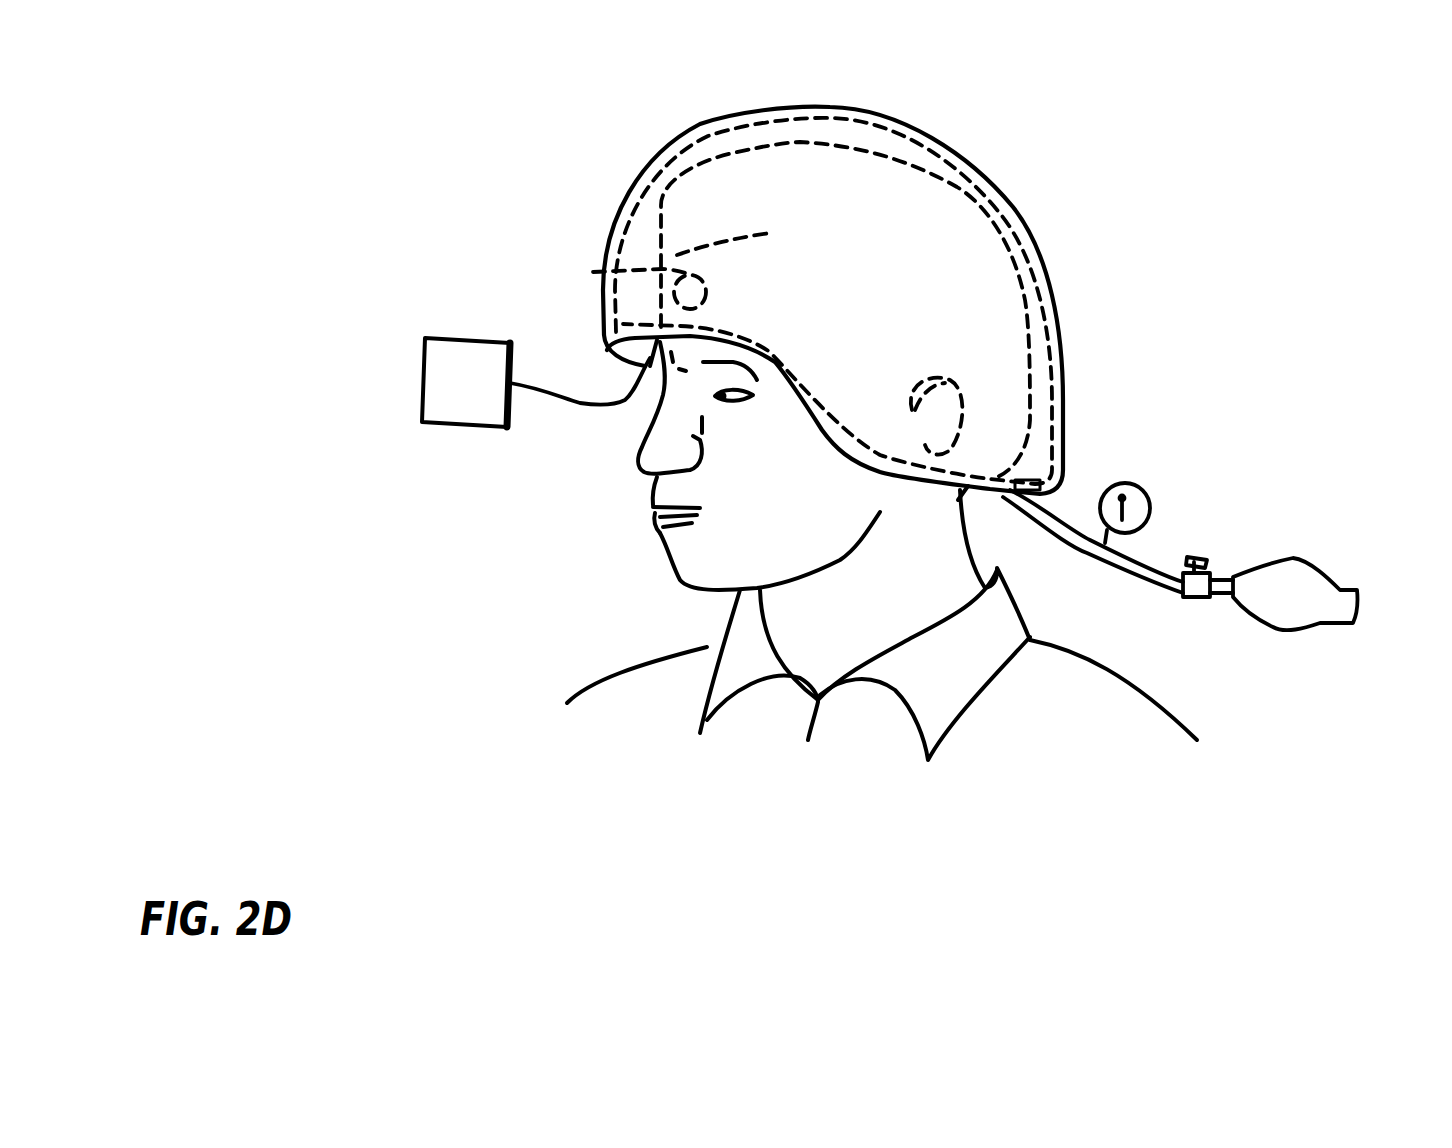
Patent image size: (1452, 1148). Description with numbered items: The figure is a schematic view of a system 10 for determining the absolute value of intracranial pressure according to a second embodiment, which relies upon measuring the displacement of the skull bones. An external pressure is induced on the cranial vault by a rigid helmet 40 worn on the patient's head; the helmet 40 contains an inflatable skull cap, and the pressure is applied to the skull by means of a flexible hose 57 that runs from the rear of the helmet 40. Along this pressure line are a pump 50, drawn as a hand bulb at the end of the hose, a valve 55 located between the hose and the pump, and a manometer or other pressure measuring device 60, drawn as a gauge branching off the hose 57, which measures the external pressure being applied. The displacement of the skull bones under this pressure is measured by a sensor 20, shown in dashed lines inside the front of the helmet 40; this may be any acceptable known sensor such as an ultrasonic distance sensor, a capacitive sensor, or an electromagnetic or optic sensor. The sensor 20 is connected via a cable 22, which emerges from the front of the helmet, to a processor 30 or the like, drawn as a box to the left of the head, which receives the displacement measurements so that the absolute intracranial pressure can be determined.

The system 10 is at (562, 548).
The sensor 20 is at (593, 272).
The cable 22 is at (580, 403).
The processor 30 is at (420, 390).
The rigid helmet 40 is at (943, 140).
The pump 50 is at (1323, 570).
The valve 55 is at (1213, 557).
The flexible hose 57 is at (1067, 545).
The pressure measuring device 60 is at (1150, 497).